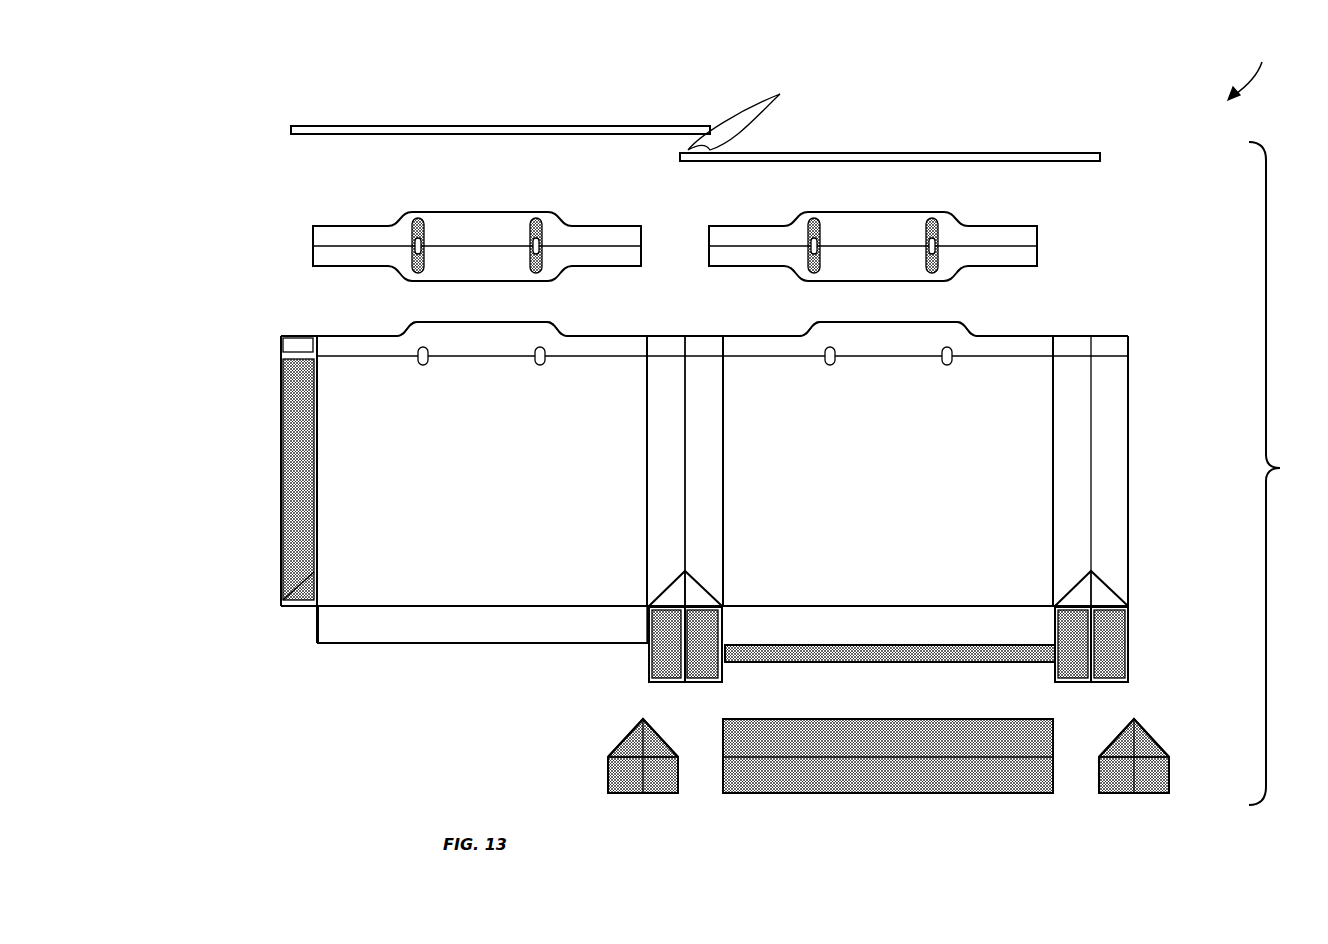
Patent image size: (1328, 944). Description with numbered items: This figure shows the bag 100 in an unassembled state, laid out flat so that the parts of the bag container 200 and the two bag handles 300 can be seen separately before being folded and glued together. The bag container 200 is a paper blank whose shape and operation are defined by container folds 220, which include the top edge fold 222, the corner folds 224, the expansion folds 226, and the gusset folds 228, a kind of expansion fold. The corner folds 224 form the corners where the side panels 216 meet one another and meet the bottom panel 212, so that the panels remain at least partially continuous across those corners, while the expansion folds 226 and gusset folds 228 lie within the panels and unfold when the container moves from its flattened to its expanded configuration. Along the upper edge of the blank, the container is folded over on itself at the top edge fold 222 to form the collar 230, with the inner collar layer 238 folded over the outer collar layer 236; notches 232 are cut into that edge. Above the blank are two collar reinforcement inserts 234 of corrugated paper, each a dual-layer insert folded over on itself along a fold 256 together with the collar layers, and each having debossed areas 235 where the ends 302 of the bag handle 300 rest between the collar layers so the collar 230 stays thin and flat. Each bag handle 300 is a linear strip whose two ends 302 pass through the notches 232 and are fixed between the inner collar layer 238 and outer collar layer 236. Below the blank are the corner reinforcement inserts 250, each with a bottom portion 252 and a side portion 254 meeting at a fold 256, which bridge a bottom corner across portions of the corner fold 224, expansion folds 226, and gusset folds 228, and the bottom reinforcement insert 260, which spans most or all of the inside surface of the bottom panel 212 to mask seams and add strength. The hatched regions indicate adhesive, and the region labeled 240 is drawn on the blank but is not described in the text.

The bag 100 is at (1263, 74).
The bag container 200 is at (1284, 473).
The bottom panel 212 is at (480, 646).
The side panels 216 is at (1078, 372).
The container folds 220 is at (365, 362).
The top edge fold 222 is at (470, 360).
The corner folds 224 is at (317, 554).
The expansion folds 226 is at (690, 505).
The gusset folds 228 is at (700, 566).
The collar 230 is at (340, 348).
The notches 232 is at (423, 367).
The collar reinforcement insert 234 is at (343, 228).
The debossed areas 235 is at (418, 218).
The outer collar layer 236 is at (660, 370).
The inner collar layer 238 is at (600, 340).
The fold 240 is at (690, 580).
The corner reinforcement insert 250 is at (614, 735).
The bottom portion 252 is at (665, 795).
The side portion 254 is at (662, 740).
The folds 256 is at (465, 244).
The bottom reinforcement insert 260 is at (812, 719).
The bag handle 300 is at (357, 125).
The ends 302 is at (300, 125).